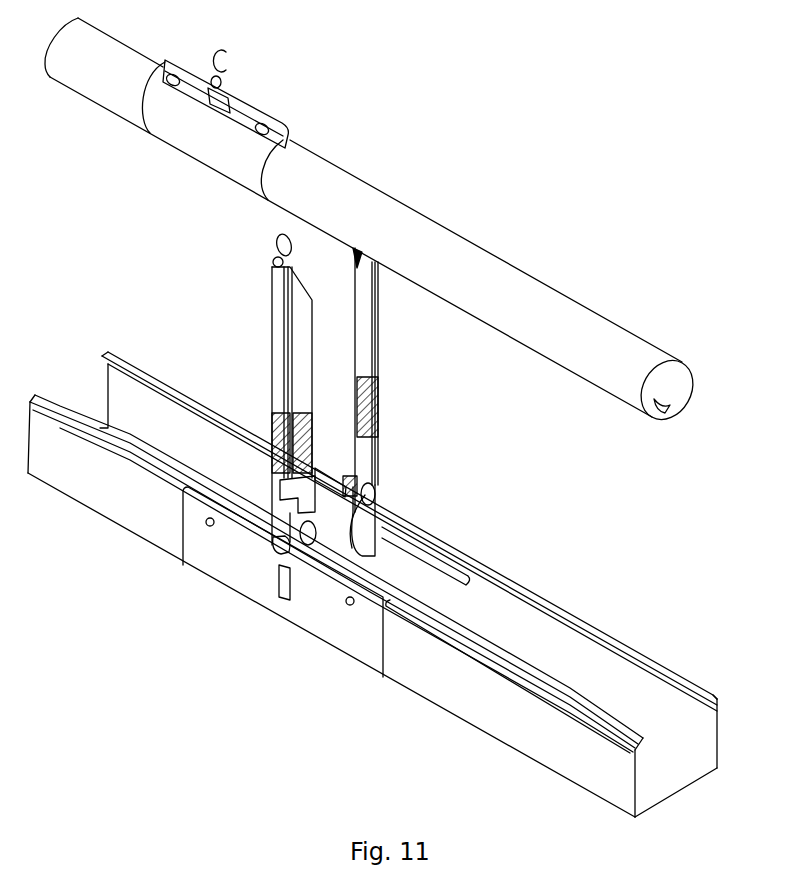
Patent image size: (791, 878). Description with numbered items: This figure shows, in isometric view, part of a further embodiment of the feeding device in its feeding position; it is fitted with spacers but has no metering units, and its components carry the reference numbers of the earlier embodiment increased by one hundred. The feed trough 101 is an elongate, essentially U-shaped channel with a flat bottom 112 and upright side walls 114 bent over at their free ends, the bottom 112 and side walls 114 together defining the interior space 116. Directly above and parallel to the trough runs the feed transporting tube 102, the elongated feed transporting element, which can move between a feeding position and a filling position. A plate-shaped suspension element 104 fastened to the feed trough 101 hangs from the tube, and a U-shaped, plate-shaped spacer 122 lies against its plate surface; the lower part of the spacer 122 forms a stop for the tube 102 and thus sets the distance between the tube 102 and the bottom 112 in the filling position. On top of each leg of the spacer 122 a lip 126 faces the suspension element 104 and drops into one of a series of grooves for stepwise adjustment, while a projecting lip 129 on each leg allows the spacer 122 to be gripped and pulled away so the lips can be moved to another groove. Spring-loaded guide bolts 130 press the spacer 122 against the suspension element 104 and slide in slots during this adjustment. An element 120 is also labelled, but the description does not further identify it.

The feed trough 101 is at (402, 597).
The feed transporting tube 102 is at (509, 238).
The suspension element 104 is at (331, 456).
The bottom 112 is at (667, 778).
The side wall 114 is at (650, 692).
The interior space 116 is at (703, 738).
The threaded rod section 120 is at (312, 432).
The spacer 122 is at (395, 512).
The lip 126 is at (378, 417).
The projecting lip 129 is at (393, 433).
The guide bolt 130 is at (383, 492).